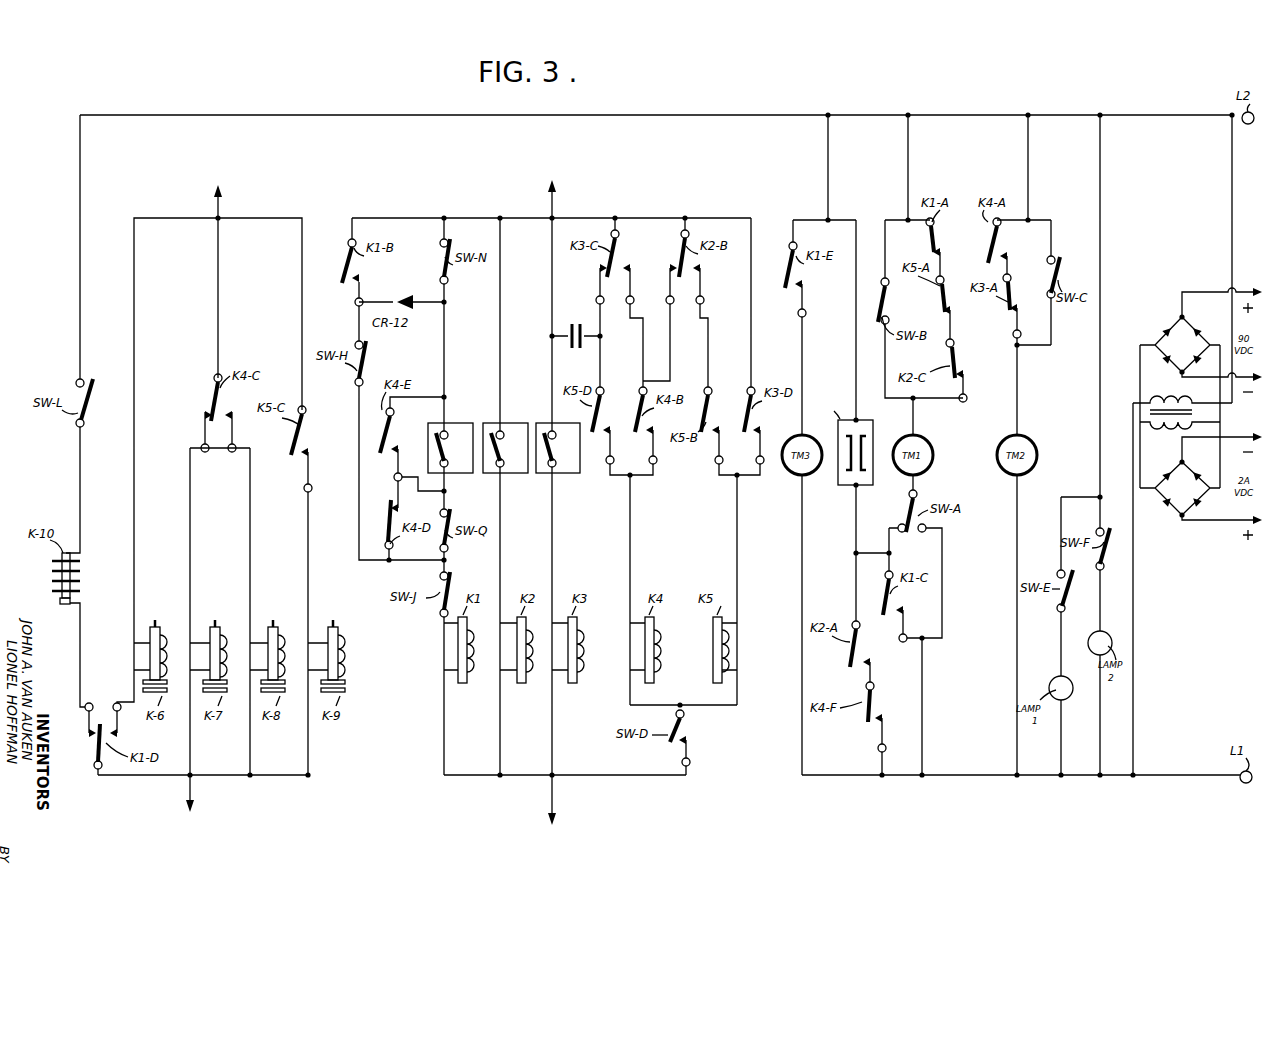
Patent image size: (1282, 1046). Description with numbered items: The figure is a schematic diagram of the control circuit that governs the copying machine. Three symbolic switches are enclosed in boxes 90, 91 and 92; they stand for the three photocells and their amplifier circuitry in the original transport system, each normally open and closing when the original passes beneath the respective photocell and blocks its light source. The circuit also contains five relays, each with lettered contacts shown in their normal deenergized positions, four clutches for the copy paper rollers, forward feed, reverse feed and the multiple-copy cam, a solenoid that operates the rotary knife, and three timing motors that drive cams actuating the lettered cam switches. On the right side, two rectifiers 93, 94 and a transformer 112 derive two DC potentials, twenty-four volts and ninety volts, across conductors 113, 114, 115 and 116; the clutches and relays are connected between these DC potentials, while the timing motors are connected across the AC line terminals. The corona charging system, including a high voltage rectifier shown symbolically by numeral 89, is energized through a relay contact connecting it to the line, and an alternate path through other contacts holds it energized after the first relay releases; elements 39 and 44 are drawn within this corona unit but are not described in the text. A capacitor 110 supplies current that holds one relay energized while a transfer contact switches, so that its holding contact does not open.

The relay contact of correction unit 39 is at (866, 448).
The relay contact of correction unit 44 is at (844, 475).
The high voltage rectifier 89 is at (871, 484).
The box 90 is at (460, 422).
The box 91 is at (516, 422).
The box 92 is at (576, 473).
The rectifier 93 is at (1160, 329).
The rectifier 94 is at (1190, 502).
The capacitor 110 is at (584, 325).
The transformer 112 is at (1166, 402).
The conductor 113 is at (223, 194).
The conductor 114 is at (194, 806).
The conductor 115 is at (559, 192).
The conductor 116 is at (557, 806).